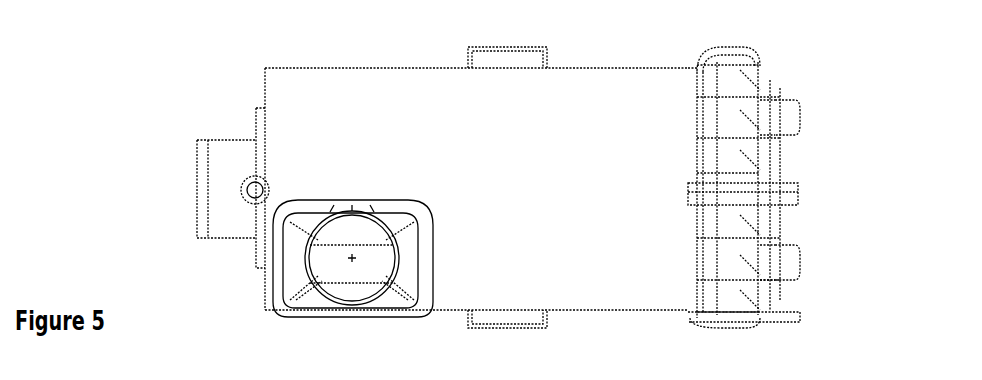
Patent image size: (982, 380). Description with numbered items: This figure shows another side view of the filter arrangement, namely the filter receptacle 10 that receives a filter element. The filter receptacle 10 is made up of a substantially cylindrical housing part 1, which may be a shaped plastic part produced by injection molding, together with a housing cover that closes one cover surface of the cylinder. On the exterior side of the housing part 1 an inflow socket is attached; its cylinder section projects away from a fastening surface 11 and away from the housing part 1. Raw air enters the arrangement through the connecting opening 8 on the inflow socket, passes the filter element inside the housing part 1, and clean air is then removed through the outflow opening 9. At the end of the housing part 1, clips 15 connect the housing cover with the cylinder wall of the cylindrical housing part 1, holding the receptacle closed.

The housing part 1 is at (622, 72).
The connecting opening 8 is at (353, 318).
The outflow opening 9 is at (190, 185).
The filter receptacle 10 is at (222, 70).
The fastening surface 11 is at (428, 215).
The clips 15 is at (742, 50).